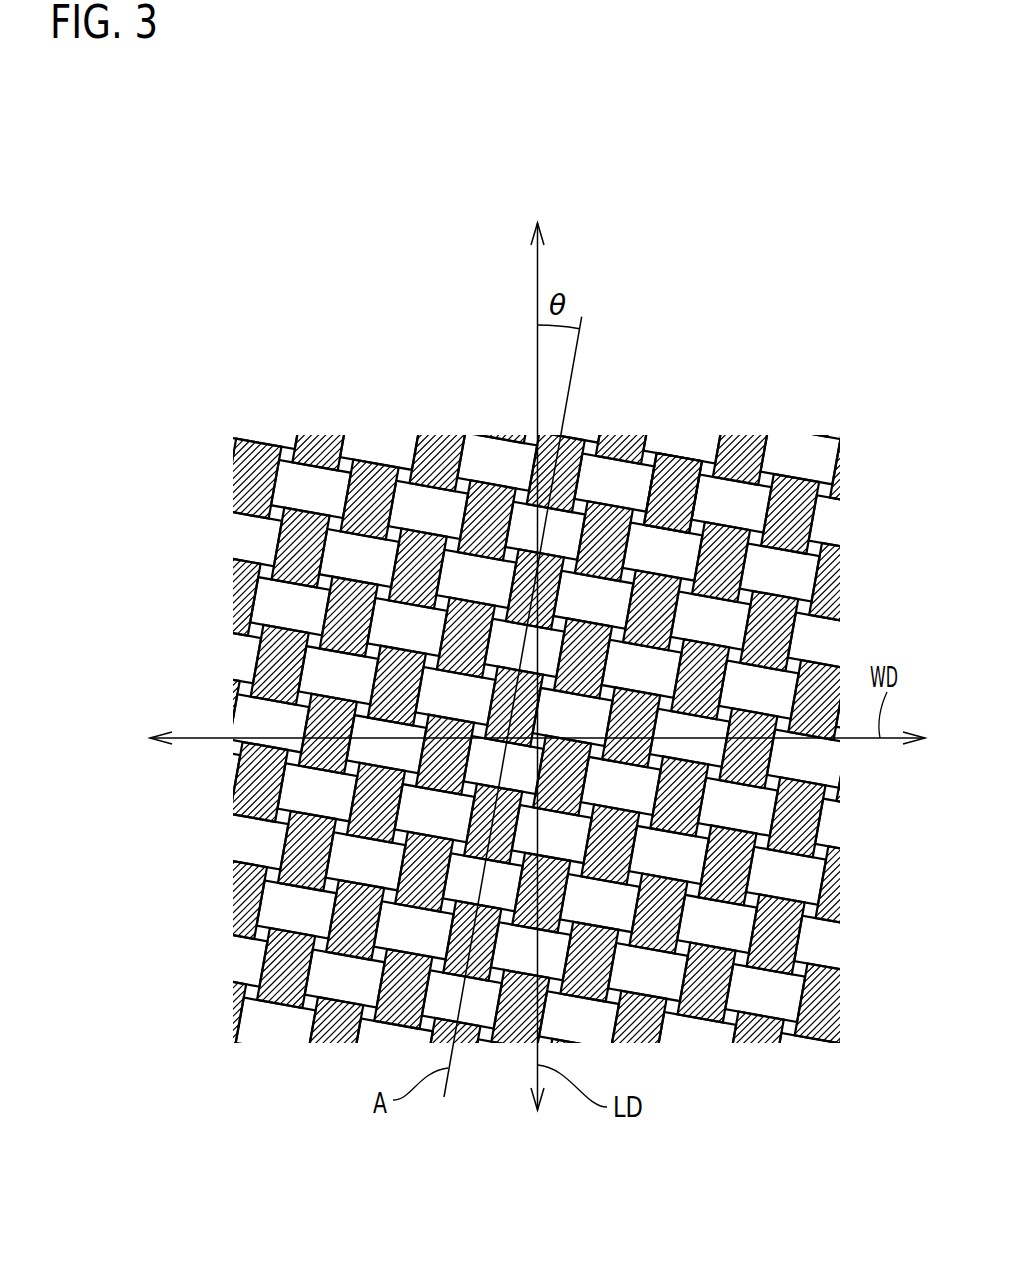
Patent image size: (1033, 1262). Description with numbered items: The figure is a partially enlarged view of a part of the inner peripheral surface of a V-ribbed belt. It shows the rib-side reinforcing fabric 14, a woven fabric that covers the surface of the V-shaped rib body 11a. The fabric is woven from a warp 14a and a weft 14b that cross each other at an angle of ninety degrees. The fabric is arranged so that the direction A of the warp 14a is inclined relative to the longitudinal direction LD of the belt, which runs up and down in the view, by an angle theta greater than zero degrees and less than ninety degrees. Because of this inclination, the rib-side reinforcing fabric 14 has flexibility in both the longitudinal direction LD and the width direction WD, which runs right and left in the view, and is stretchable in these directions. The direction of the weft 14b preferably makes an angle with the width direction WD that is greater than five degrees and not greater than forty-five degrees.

The rib-side reinforcing fabric 14 is at (829, 412).
The warp 14a is at (438, 450).
The weft 14b is at (252, 536).
The V-shaped rib body 11a is at (687, 447).